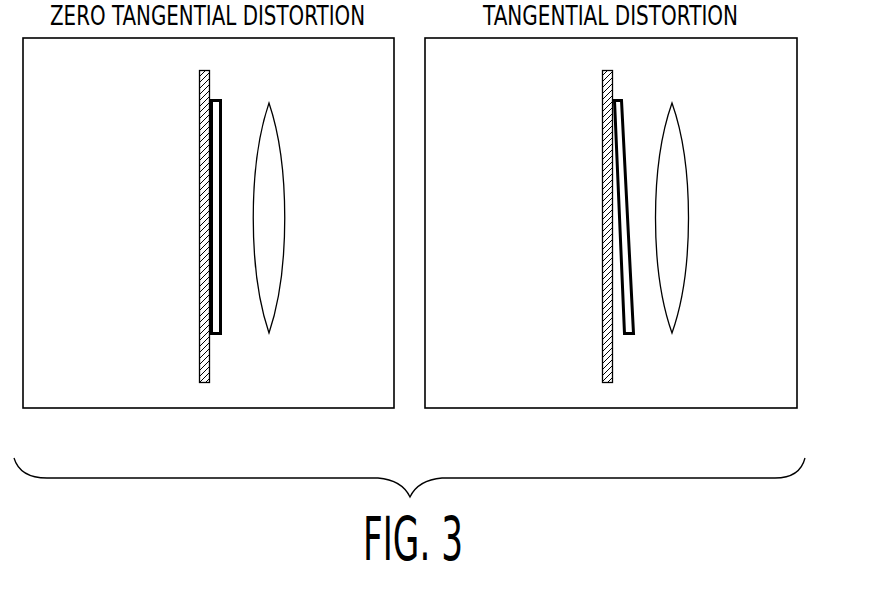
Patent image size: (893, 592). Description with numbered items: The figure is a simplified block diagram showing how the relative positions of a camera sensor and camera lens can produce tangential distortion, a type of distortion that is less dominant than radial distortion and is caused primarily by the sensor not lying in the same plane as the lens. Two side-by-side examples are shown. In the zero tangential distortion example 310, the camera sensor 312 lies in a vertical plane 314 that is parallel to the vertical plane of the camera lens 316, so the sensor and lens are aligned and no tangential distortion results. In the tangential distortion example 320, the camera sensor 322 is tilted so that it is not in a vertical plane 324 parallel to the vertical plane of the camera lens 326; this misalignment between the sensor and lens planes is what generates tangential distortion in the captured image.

The zero tangential distortion example 310 is at (178, 408).
The camera sensor 312 is at (212, 120).
The vertical plane 314 is at (199, 289).
The camera lens 316 is at (277, 235).
The tangential distortion example 320 is at (687, 408).
The camera sensor 322 is at (615, 120).
The vertical plane 324 is at (602, 289).
The camera lens 326 is at (679, 235).